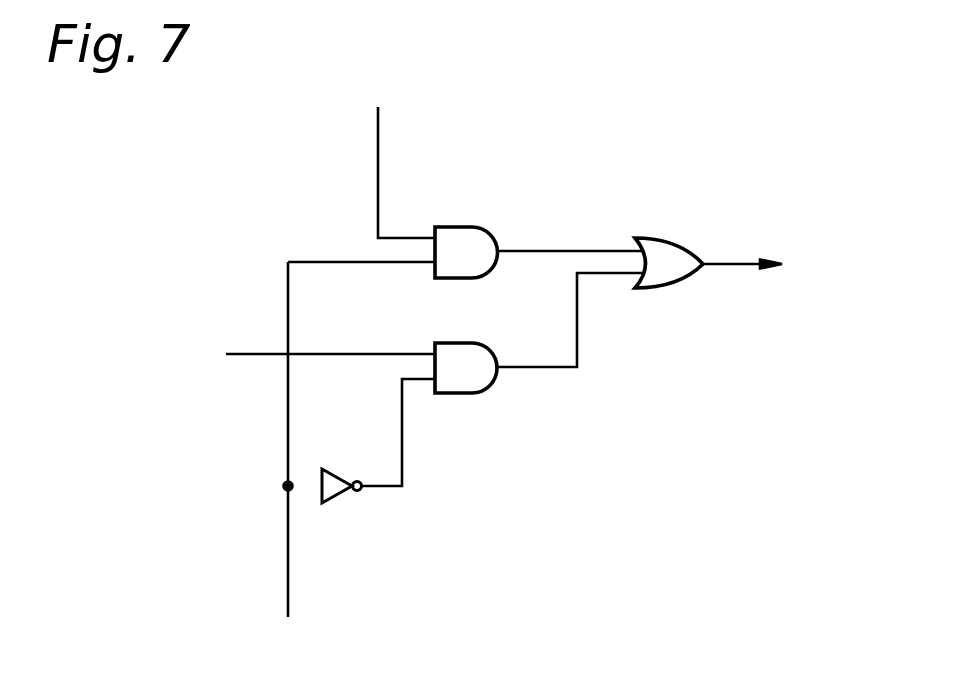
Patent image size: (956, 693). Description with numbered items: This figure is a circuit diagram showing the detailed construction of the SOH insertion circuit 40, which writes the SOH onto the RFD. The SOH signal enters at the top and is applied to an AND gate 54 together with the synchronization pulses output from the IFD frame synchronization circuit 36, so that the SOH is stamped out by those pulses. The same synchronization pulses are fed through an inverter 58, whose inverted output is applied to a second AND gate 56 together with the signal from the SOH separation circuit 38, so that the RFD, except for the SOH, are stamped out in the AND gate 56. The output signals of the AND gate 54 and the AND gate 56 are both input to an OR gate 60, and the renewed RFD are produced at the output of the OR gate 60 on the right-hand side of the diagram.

The IFD frame synchronization circuit 36 is at (292, 458).
The SOH separation circuit 38 is at (309, 353).
The SOH insertion circuit 40 is at (549, 104).
The AND gate 54 is at (475, 227).
The AND gate 56 is at (492, 388).
The inverter 58 is at (340, 497).
The OR gate 60 is at (694, 286).